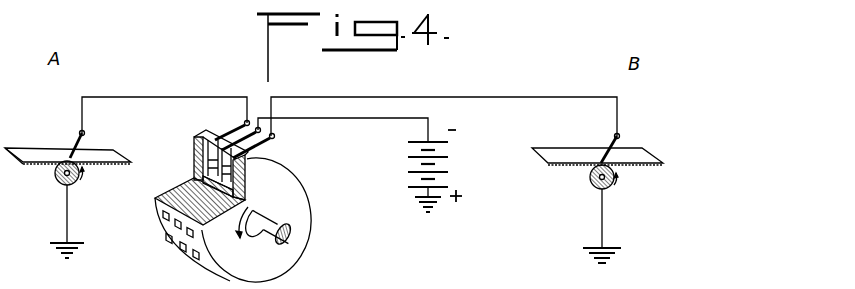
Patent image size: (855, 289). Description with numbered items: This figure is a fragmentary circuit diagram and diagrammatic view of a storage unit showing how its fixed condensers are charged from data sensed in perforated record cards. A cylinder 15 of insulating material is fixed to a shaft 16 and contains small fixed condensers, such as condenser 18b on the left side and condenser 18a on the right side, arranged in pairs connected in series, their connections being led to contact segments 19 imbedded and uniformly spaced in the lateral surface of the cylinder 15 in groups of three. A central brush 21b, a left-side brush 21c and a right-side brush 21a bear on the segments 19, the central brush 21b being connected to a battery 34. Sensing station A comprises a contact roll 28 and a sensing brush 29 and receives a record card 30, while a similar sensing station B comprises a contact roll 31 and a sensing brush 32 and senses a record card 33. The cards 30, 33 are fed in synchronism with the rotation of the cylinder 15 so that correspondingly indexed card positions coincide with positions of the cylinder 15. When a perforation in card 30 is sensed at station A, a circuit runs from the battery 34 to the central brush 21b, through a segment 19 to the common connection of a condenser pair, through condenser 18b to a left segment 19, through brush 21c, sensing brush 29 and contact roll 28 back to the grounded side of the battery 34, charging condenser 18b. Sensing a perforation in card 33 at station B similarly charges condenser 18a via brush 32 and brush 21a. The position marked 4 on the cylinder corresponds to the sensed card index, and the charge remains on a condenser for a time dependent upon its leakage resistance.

The brush block 4 is at (230, 179).
The cylinder 15 is at (297, 232).
The shaft 16 is at (283, 243).
The condenser 18a is at (244, 188).
The condenser 18b is at (194, 158).
The contact segments 19 is at (196, 253).
The brush 21a is at (268, 141).
The central brush 21b is at (258, 127).
The brush 21c is at (239, 123).
The contact roll 28 is at (55, 164).
The sensing brush 29 is at (78, 146).
The record card 30 is at (110, 163).
The contact roll 31 is at (587, 170).
The sensing brush 32 is at (612, 141).
The record card 33 is at (555, 147).
The battery 34 is at (450, 160).